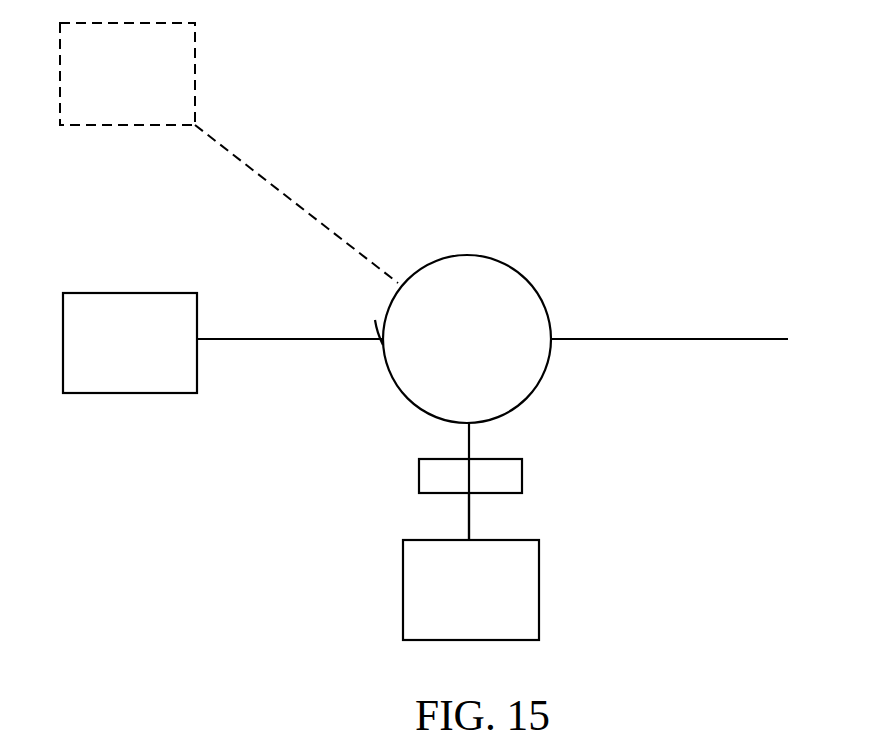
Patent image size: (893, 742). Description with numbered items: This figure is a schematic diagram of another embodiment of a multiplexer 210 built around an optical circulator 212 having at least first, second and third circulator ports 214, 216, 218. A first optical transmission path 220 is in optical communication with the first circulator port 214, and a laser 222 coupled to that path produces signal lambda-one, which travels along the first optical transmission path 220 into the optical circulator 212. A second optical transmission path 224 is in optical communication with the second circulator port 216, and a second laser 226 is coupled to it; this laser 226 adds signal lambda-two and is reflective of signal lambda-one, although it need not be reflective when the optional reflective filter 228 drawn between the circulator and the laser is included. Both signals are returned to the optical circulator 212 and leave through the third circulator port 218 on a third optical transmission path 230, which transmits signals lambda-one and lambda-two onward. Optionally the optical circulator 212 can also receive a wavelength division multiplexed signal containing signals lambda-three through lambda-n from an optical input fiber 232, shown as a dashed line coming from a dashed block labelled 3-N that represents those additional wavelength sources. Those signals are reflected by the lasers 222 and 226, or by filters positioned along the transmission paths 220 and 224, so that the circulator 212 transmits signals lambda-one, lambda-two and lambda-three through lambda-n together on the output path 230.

The multiplexer 210 is at (316, 497).
The optical circulator 212 is at (527, 268).
The first circulator port 214 is at (384, 339).
The second circulator port 216 is at (470, 423).
The third circulator port 218 is at (563, 339).
The first optical transmission path 220 is at (287, 340).
The laser 222 is at (168, 383).
The second optical transmission path 224 is at (469, 508).
The laser 226 is at (525, 572).
The reflective filter 228 is at (522, 470).
The output fiber 230 is at (678, 339).
The optical input fiber 232 is at (267, 182).
The additional module 3-N is at (150, 74).